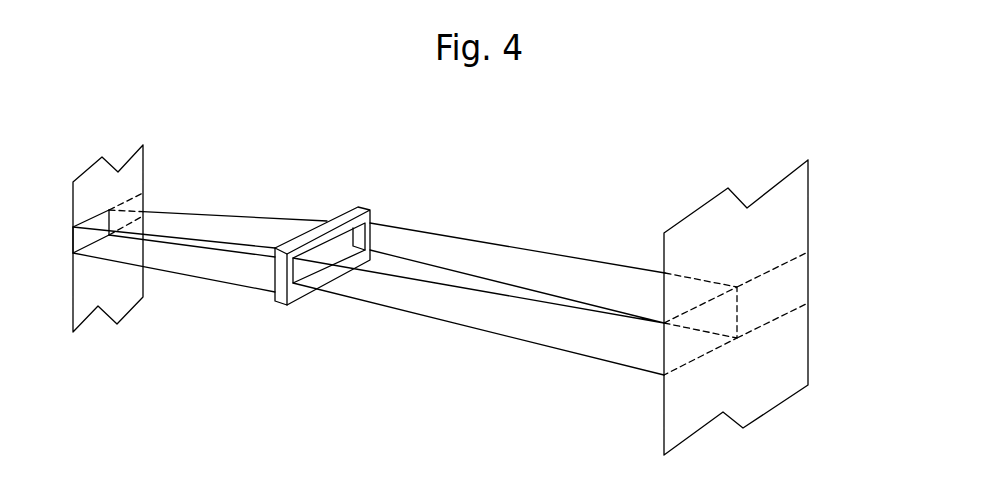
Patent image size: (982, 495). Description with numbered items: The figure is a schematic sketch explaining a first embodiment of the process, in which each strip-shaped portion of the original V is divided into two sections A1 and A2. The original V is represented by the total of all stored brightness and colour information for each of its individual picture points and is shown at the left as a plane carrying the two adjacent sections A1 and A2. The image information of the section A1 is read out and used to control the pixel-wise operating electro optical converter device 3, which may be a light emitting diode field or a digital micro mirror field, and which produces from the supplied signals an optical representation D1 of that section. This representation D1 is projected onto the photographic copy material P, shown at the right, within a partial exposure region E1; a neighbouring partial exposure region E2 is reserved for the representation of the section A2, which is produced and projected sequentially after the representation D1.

The original V is at (85, 302).
The section A1 is at (97, 225).
The section A2 is at (133, 203).
The electro optical converter device 3 is at (368, 264).
The optical representation D1 is at (332, 250).
The copy material P is at (760, 383).
The partial exposure region E1 is at (682, 340).
The partial exposure region E2 is at (778, 295).